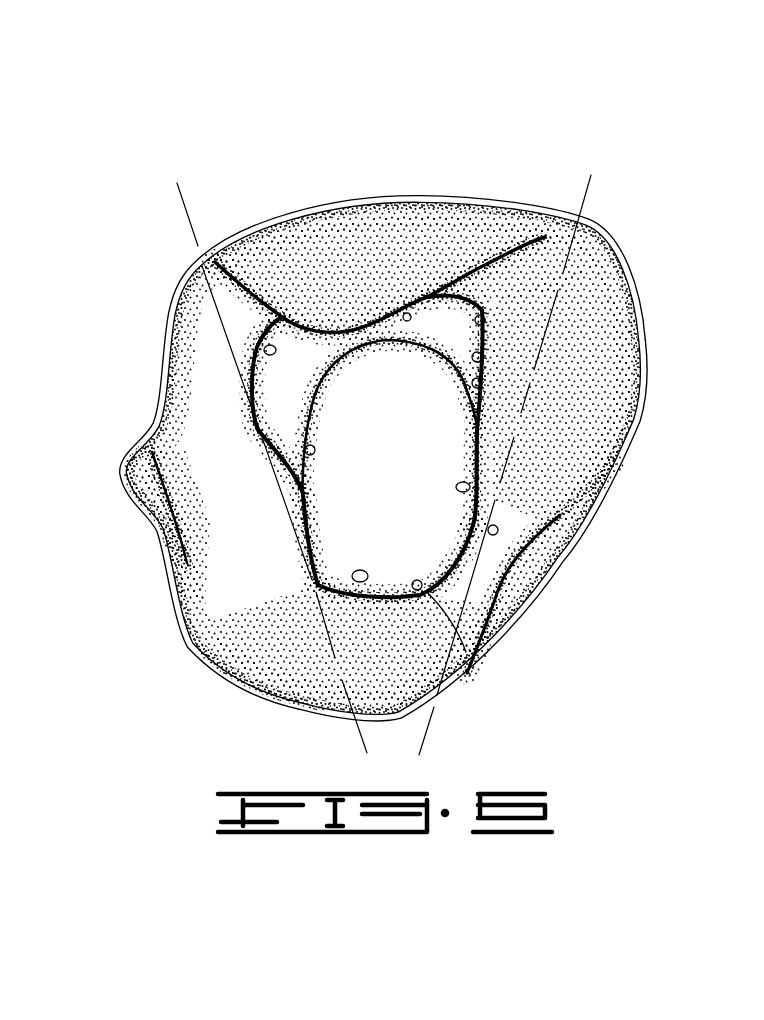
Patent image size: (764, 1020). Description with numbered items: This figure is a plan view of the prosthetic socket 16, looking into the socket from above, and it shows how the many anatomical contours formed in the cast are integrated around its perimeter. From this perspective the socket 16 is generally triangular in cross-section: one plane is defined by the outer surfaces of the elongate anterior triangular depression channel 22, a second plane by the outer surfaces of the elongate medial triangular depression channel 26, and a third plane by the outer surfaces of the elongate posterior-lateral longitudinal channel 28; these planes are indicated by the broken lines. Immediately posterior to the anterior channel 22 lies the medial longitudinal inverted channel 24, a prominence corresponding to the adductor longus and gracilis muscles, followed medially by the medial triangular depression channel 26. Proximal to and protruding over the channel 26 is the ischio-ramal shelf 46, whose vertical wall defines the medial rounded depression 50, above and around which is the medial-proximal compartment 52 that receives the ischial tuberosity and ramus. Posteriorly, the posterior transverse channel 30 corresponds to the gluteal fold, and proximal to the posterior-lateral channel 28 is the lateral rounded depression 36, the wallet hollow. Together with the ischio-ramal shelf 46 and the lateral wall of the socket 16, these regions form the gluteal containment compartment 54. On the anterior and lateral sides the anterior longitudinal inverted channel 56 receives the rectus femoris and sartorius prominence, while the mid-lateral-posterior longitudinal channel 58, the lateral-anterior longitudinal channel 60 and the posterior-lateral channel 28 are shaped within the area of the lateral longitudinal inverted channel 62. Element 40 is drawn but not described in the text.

The socket 16 is at (281, 178).
The elongate anterior triangular depression channel 22 is at (423, 292).
The medial longitudinal inverted channel 24 is at (262, 350).
The elongate medial triangular depression channel 26 is at (300, 438).
The elongate posterior-lateral longitudinal channel 28 is at (477, 490).
The posterior transverse channel 30 is at (490, 658).
The lateral rounded depression 36 is at (530, 567).
The bottom ridge 40 is at (370, 573).
The ischio-ramal shelf 46 is at (243, 480).
The medial rounded depression 50 is at (173, 522).
The medial-proximal compartment 52 is at (165, 556).
The gluteal containment compartment 54 is at (279, 660).
The anterior longitudinal inverted channel 56 is at (123, 345).
The mid-lateral-posterior longitudinal channel 58 is at (483, 356).
The lateral-anterior longitudinal channel 60 is at (485, 385).
The lateral longitudinal inverted channel 62 is at (493, 437).